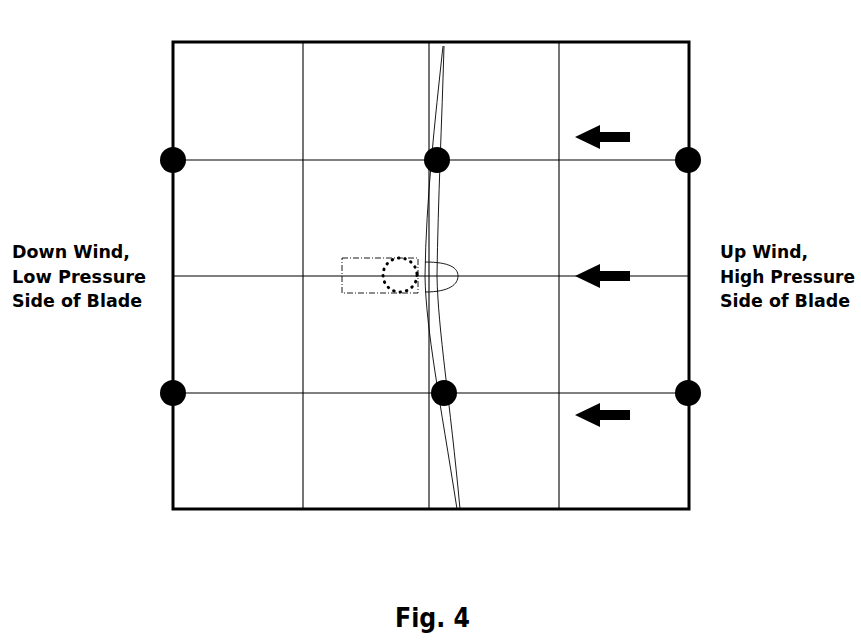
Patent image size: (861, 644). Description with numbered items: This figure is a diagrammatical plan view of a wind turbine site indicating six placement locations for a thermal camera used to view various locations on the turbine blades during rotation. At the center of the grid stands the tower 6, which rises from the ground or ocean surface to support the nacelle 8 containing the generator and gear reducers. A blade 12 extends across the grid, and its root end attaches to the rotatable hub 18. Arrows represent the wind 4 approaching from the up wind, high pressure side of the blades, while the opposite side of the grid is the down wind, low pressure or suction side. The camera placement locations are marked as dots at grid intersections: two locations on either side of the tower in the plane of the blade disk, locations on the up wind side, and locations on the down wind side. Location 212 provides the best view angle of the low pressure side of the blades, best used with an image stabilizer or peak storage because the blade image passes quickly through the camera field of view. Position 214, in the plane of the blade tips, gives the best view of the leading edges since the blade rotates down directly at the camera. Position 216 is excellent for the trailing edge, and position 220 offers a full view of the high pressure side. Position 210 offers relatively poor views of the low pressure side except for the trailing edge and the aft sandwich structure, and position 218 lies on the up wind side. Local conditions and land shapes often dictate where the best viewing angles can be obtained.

The wind 4 is at (598, 141).
The tower 6 is at (405, 293).
The nacelle 8 is at (359, 273).
The blade 12 is at (427, 133).
The rotatable hub 18 is at (447, 268).
The camera position 210 is at (165, 400).
The camera position 212 is at (160, 163).
The camera position 214 is at (450, 157).
The camera position 216 is at (455, 400).
The camera position 218 is at (700, 153).
The camera position 220 is at (698, 400).